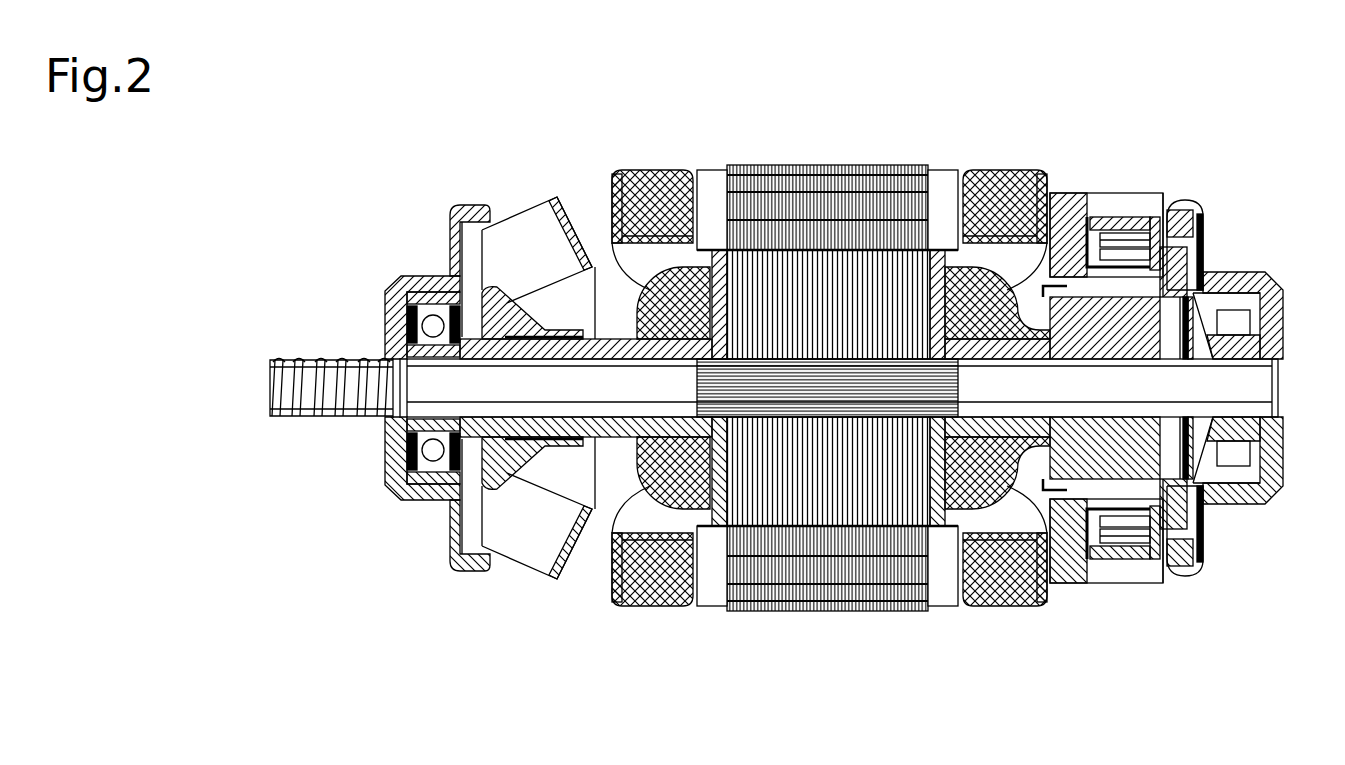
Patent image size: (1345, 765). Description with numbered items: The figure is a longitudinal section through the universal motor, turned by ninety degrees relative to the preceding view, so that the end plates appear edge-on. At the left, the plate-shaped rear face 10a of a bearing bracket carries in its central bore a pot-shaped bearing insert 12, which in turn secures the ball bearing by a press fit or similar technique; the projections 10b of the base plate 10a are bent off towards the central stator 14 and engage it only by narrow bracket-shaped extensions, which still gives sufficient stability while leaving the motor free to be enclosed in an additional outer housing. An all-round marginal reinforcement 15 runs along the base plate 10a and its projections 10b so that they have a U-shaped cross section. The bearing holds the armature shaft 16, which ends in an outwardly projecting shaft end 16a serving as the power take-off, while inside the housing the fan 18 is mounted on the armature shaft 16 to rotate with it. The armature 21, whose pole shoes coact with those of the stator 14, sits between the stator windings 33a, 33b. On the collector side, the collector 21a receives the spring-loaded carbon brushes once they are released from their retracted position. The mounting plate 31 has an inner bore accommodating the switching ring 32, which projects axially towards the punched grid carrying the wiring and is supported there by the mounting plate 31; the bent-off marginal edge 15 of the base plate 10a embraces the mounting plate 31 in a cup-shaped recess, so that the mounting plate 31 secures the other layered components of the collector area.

The plate-shaped rear face 10a is at (1218, 292).
The projection 10b is at (1207, 513).
The pot-shaped bearing insert 12 is at (422, 492).
The stator 14 is at (860, 567).
The marginal reinforcement 15 is at (1190, 500).
The armature shaft 16 is at (613, 380).
The shaft end 16a is at (312, 358).
The fan 18 is at (525, 223).
The armature 21 is at (813, 478).
The collector 21a is at (1083, 282).
The mounting plate 31 is at (1205, 520).
The switching ring 32 is at (1145, 522).
The stator winding 33a is at (647, 172).
The stator winding 33b is at (652, 600).